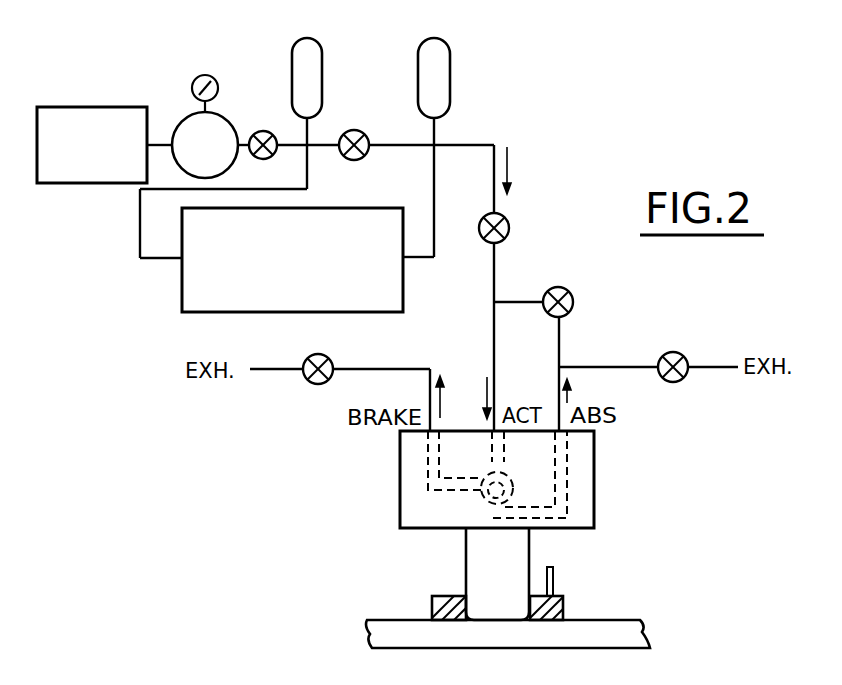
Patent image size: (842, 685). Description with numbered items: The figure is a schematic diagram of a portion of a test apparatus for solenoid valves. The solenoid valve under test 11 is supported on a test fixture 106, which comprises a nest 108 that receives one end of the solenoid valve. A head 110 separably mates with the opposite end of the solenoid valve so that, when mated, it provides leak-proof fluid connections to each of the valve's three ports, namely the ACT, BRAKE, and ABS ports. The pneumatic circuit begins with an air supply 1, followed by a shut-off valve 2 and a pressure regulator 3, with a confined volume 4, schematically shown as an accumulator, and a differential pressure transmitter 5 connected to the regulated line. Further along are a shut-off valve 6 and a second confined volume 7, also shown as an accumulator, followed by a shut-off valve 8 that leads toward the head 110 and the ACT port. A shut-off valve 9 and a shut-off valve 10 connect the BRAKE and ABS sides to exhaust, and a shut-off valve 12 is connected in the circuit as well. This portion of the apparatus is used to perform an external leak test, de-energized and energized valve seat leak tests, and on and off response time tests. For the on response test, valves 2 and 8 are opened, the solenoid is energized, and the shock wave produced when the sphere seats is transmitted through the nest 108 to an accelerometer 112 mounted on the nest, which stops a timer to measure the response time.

The air supply 1 is at (85, 107).
The shut-off valve 2 is at (267, 130).
The pressure regulator 3 is at (178, 123).
The confined volume 4 is at (322, 56).
The differential pressure transmitter 5 is at (182, 285).
The shut-off valve 6 is at (357, 130).
The confined volume 7 is at (450, 78).
The shut-off valve 8 is at (509, 223).
The shut-off valve 9 is at (313, 386).
The shut-off valve 10 is at (678, 352).
The solenoid valve under test 11 is at (466, 551).
The shut-off valve 12 is at (572, 295).
The test fixture 106 is at (640, 617).
The nest 108 is at (432, 606).
The head 110 is at (400, 467).
The accelerometer 112 is at (553, 580).